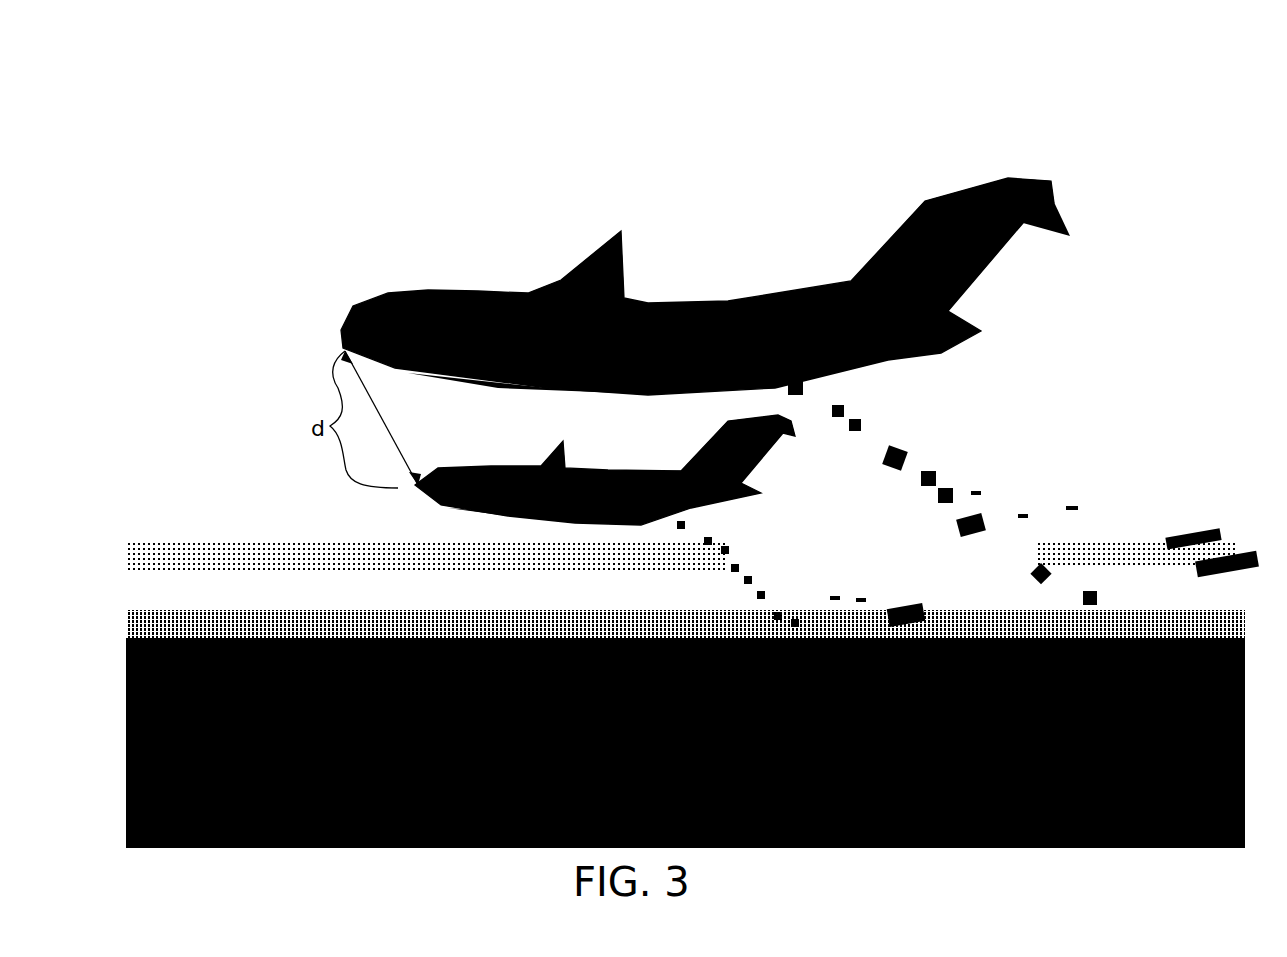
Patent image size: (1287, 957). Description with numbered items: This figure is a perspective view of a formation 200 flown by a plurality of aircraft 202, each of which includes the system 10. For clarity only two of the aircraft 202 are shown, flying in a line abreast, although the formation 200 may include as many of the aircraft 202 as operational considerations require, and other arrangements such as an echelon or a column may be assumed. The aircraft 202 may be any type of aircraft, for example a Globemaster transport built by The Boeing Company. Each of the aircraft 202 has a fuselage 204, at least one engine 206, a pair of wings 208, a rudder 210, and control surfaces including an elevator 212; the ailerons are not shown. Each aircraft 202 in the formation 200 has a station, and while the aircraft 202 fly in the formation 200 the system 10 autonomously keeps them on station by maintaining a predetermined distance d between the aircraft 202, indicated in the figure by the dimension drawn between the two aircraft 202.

The system 10 is at (405, 281).
The formation 200 is at (272, 438).
The aircraft 202 is at (752, 256).
The fuselage 204 is at (490, 381).
The engine 206 is at (470, 280).
The wings 208 is at (622, 270).
The rudder 210 is at (976, 262).
The elevator 212 is at (1046, 176).